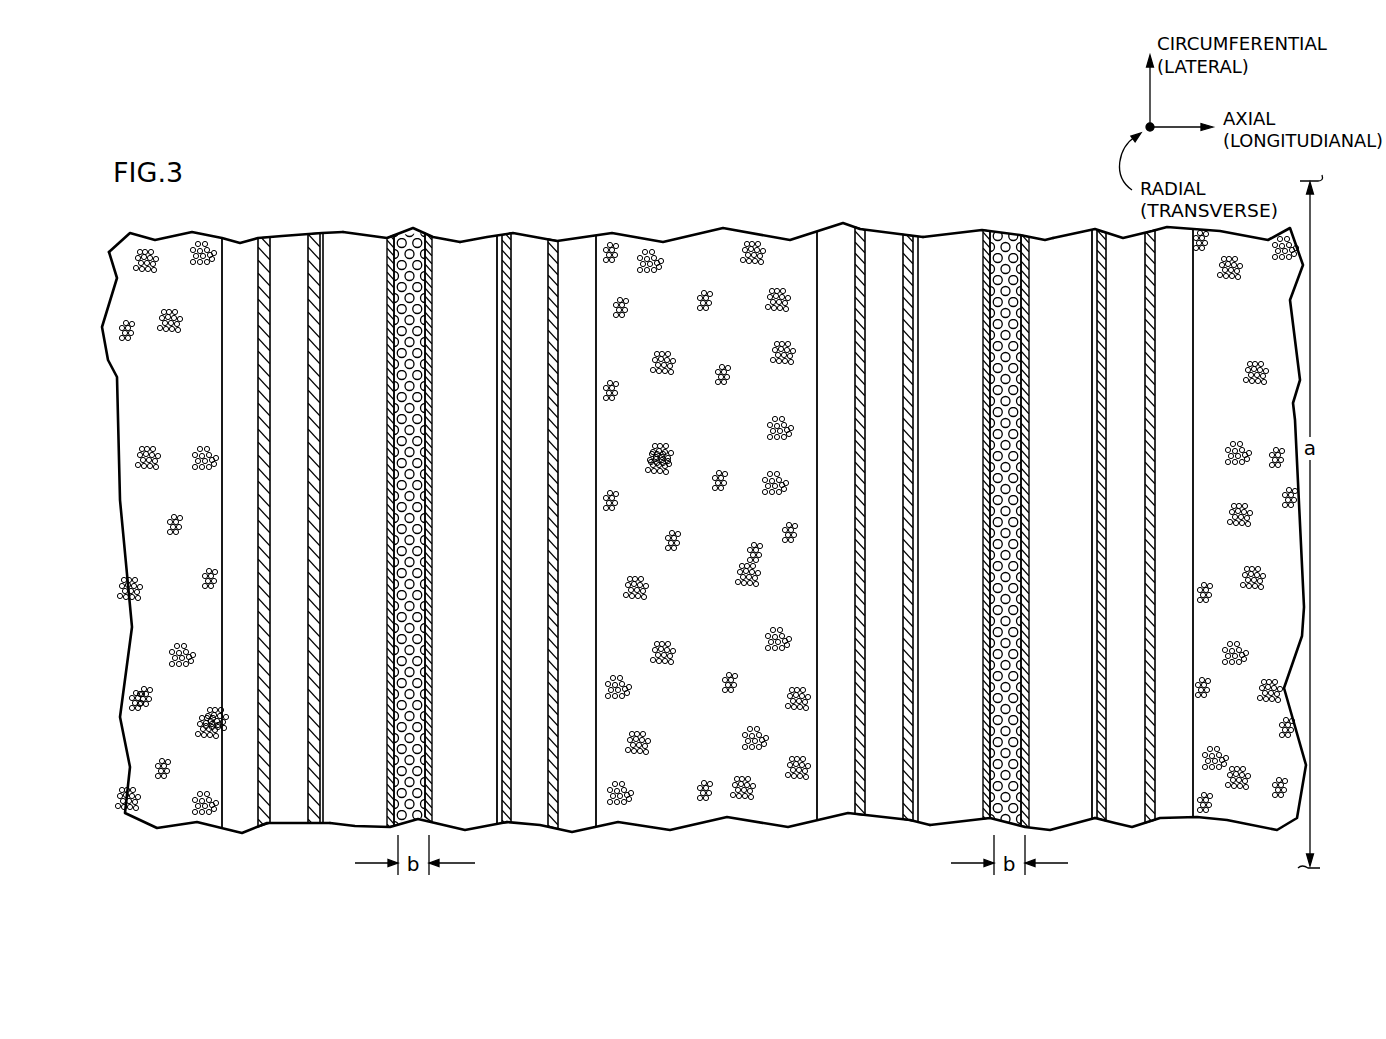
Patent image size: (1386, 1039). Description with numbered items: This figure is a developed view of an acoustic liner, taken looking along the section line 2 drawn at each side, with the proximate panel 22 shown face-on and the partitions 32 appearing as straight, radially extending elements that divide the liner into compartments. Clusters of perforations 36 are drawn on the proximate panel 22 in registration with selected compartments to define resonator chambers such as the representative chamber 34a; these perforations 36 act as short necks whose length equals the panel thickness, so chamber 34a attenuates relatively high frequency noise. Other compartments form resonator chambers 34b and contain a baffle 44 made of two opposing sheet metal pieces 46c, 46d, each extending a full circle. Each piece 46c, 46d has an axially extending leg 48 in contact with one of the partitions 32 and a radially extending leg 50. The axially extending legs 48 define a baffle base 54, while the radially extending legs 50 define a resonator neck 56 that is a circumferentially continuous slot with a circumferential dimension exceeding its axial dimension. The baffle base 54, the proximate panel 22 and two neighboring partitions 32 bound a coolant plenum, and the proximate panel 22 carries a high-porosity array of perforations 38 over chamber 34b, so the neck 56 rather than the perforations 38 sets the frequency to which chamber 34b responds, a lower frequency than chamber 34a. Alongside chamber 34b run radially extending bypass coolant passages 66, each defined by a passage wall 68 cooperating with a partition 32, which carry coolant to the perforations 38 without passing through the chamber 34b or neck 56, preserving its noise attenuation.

The section line of FIG. 2 is at (153, 627).
The proximate panel 22 is at (158, 358).
The partitions 32 is at (313, 365).
The resonator chamber 34a is at (180, 505).
The resonator chamber 34b is at (450, 613).
The perforations 36 is at (218, 720).
The perforations 38 is at (408, 490).
The baffle 44 is at (470, 250).
The sheet metal piece 46c is at (340, 745).
The sheet metal piece 46d is at (456, 745).
The axially extending leg 48 is at (357, 802).
The radially extending leg 50 is at (388, 576).
The baffle base 54 is at (352, 250).
The resonator neck 56 is at (405, 621).
The bypass coolant passage 66 is at (287, 452).
The passage wall 68 is at (262, 370).